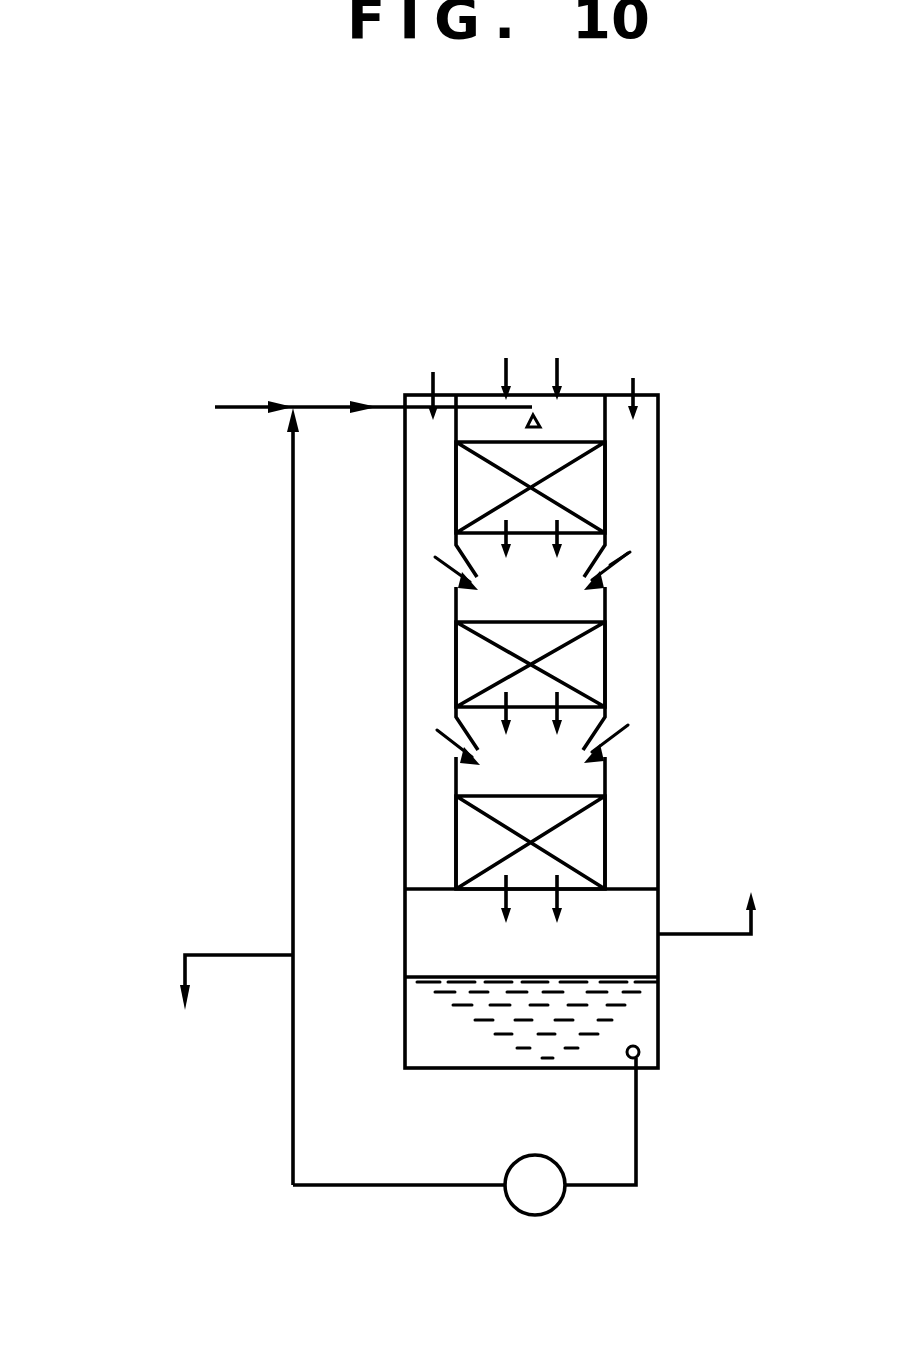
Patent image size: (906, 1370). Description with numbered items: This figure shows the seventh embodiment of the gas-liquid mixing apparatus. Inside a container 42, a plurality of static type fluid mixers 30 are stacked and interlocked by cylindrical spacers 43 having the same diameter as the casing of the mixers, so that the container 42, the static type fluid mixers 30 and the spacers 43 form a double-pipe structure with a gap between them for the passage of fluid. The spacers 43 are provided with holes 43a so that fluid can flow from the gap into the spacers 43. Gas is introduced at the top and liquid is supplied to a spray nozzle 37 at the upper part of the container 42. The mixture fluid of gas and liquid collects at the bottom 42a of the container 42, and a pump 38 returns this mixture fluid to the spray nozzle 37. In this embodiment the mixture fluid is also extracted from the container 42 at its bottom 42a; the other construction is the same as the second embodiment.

The static type fluid mixer 30 is at (593, 475).
The spray nozzle 37 is at (540, 420).
The pump 38 is at (560, 1203).
The container 42 is at (403, 665).
The bottom of the container 42a is at (455, 1055).
The cylindrical spacer 43 is at (593, 603).
The hole 43a is at (612, 566).